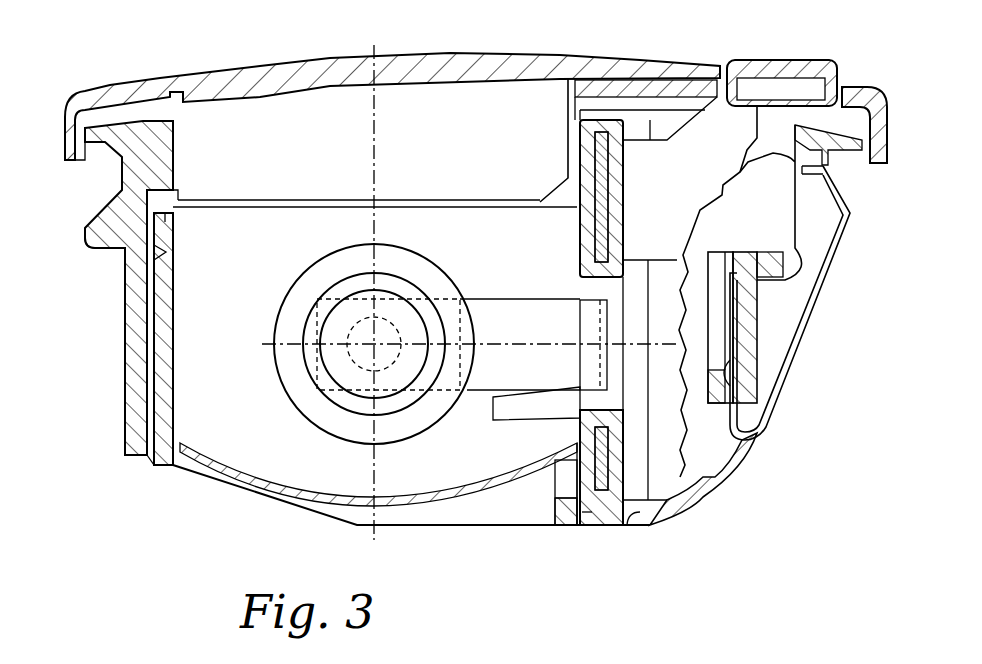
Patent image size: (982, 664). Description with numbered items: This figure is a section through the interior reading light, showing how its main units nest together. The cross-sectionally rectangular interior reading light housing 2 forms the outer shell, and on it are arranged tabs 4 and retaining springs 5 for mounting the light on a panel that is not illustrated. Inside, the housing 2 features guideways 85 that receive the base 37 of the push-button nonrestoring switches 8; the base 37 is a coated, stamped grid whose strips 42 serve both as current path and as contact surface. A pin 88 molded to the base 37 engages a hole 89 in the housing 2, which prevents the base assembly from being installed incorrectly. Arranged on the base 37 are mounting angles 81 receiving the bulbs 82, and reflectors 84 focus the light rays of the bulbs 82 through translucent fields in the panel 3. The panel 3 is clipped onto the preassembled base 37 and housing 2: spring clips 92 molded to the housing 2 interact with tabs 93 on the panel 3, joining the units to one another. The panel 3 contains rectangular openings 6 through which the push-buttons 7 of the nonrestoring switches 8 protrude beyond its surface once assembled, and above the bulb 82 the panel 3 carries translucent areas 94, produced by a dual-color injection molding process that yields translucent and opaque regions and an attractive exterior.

The interior reading light housing 2 is at (125, 427).
The panel 3 is at (693, 80).
The tabs 4 is at (100, 240).
The retaining springs 5 is at (787, 358).
The rectangular openings 6 is at (848, 88).
The push-button 7 is at (775, 62).
The push-button nonrestoring switch 8 is at (730, 198).
The base 37 is at (583, 140).
The strips 42 is at (612, 182).
The mounting angles 81 is at (480, 405).
The bulbs 82 is at (342, 420).
The reflectors 84 is at (283, 447).
The guideways 85 is at (553, 490).
The pin 88 is at (592, 512).
The hole 89 is at (640, 520).
The spring clips 92 is at (160, 218).
The tabs 93 is at (157, 248).
The translucent areas 94 is at (300, 62).